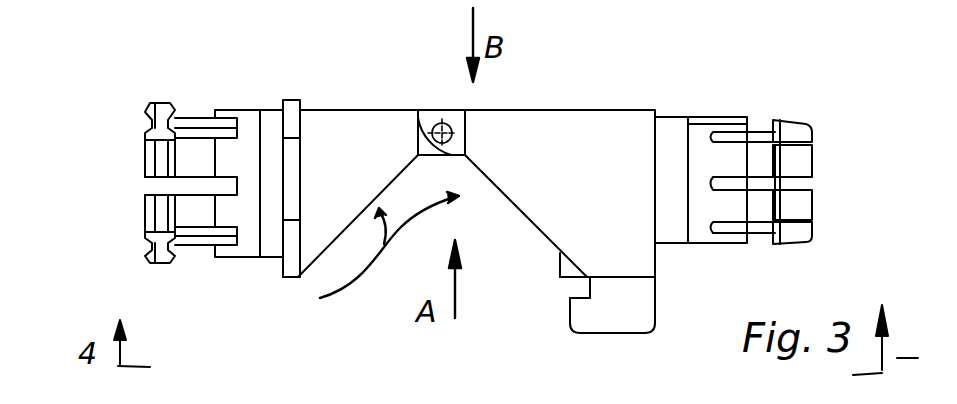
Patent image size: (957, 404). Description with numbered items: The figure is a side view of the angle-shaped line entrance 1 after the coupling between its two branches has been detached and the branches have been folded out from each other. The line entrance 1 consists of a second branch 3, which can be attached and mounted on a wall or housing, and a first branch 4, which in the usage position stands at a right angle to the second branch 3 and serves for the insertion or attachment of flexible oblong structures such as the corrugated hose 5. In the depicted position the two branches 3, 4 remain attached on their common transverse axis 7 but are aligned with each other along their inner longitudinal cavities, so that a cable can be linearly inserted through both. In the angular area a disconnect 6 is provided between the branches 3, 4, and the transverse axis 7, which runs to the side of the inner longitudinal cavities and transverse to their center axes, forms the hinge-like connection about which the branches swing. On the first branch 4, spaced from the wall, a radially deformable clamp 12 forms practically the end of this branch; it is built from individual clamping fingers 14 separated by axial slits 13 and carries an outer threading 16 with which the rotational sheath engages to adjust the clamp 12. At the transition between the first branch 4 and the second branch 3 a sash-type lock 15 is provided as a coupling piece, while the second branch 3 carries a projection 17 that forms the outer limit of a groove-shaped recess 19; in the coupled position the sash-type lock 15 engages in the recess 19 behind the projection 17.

The line entrance 1 is at (607, 72).
The second branch 3 is at (600, 209).
The first branch 4 is at (352, 186).
The corrugated hose 5 is at (122, 38).
The disconnect 6 is at (371, 264).
The transverse axis 7 is at (440, 128).
The clamp 12 is at (195, 258).
The axial slits 13 is at (180, 185).
The clamping fingers 14 is at (148, 155).
The sash-type lock 15 is at (296, 252).
The outer threading 16 is at (228, 110).
The projection 17 is at (573, 312).
The groove-shaped recess 19 is at (580, 290).